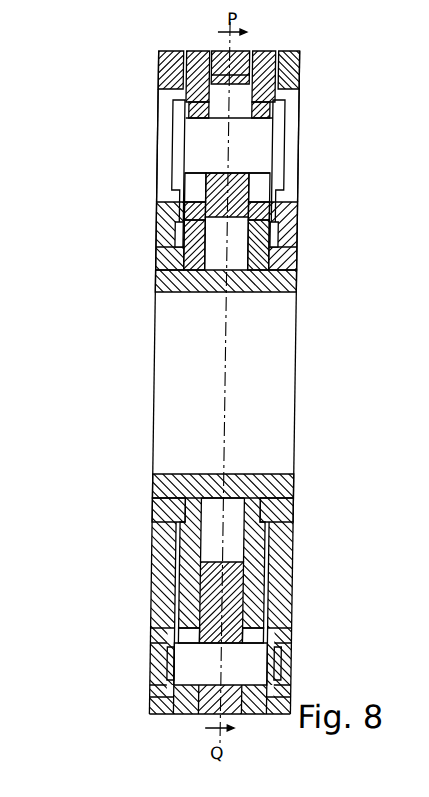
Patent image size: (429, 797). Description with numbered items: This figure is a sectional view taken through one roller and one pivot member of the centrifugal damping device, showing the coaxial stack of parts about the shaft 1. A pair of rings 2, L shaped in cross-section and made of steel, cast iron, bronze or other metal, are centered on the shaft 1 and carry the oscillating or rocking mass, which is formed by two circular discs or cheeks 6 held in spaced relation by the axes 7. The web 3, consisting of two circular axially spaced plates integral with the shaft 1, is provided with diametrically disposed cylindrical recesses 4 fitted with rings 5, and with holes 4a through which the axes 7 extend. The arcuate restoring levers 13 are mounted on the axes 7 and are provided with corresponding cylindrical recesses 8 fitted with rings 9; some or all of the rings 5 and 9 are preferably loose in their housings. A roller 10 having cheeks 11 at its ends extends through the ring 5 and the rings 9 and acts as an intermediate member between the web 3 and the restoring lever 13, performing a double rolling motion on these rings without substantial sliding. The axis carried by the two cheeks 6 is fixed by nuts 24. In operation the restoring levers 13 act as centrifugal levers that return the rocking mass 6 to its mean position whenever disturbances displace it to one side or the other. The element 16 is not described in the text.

The shaft 1 is at (171, 280).
The rings 2 is at (159, 507).
The web 3 is at (196, 75).
The cylindrical recesses 4 is at (199, 192).
The holes 4a is at (263, 640).
The rings 5 is at (192, 212).
The circular discs 6 is at (170, 230).
The axes 7 is at (231, 660).
The cylindrical recesses 8 is at (240, 95).
The rings 9 is at (220, 77).
The roller 10 is at (268, 155).
The cheeks 11 is at (183, 143).
The restoring levers 13 is at (272, 210).
The annular groove 16 is at (168, 108).
The nuts 24 is at (168, 660).